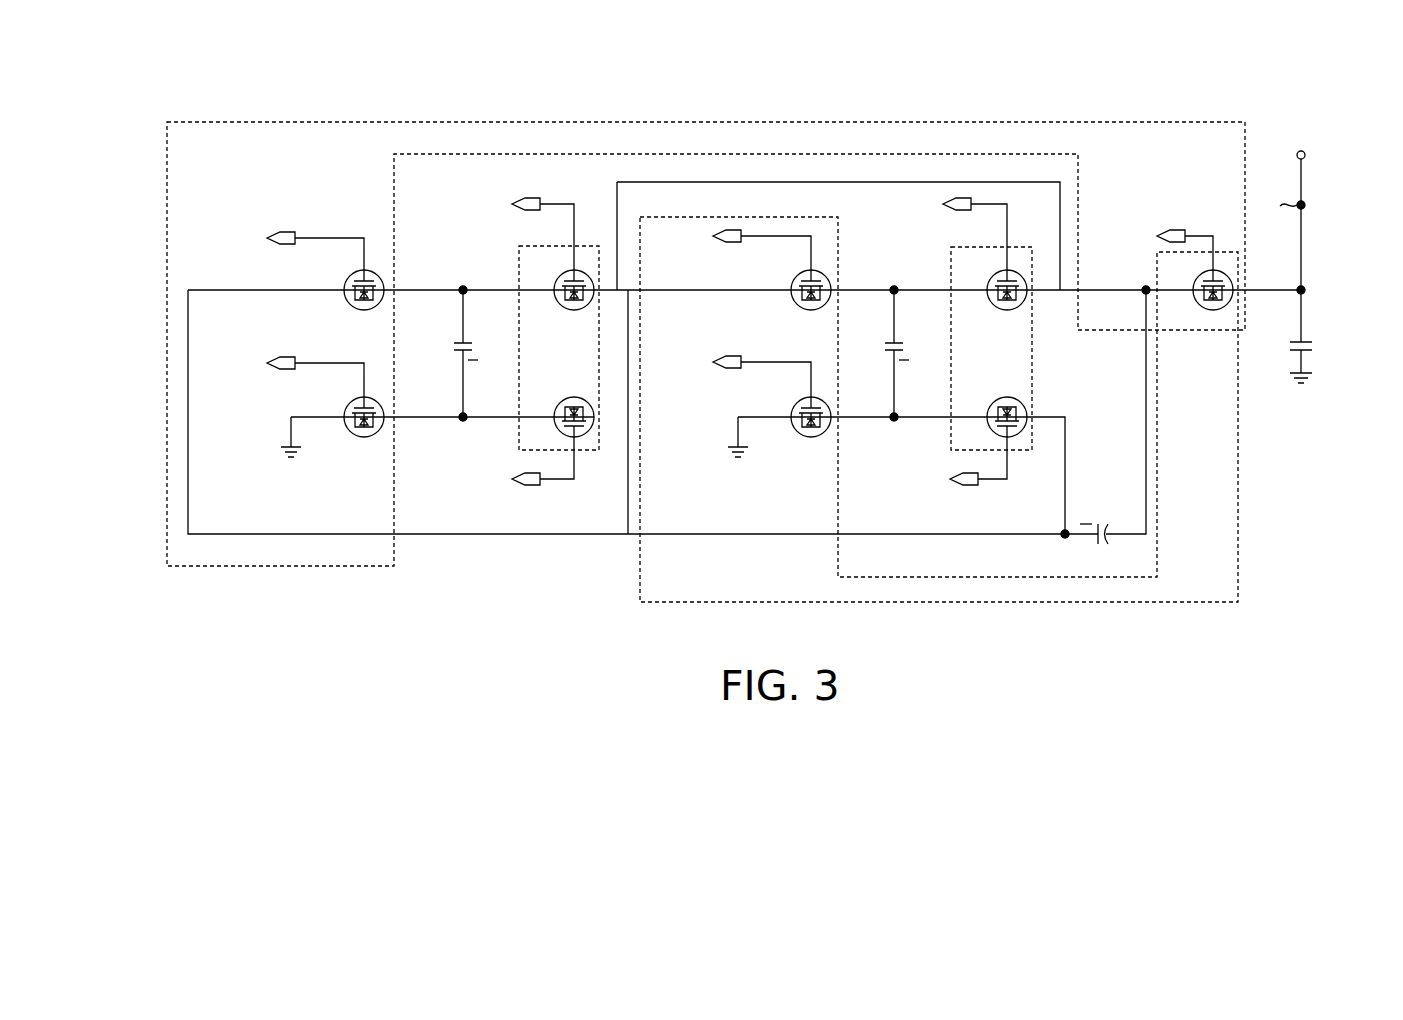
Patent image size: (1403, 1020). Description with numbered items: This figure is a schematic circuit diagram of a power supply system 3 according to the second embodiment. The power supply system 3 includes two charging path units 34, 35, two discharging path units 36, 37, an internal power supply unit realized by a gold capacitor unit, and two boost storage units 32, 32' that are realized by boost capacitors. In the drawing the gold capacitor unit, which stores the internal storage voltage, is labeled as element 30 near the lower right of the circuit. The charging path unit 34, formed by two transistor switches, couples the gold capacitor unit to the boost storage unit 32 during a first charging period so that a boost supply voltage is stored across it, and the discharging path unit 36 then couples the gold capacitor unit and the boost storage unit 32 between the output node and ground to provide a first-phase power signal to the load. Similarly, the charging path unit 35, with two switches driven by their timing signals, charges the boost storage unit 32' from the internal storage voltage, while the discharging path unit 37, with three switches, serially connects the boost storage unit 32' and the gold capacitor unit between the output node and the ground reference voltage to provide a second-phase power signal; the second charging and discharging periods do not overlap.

The power supply system 3 is at (178, 72).
The gate voltage capacitor PC3 (Vg3) 30 is at (1127, 508).
The boost storage unit 32 is at (895, 353).
The boost storage unit 32' is at (463, 353).
The charging path unit 34 is at (1020, 247).
The charging path unit 35 is at (610, 232).
The discharging path unit 36 is at (715, 602).
The discharging path unit 37 is at (712, 122).